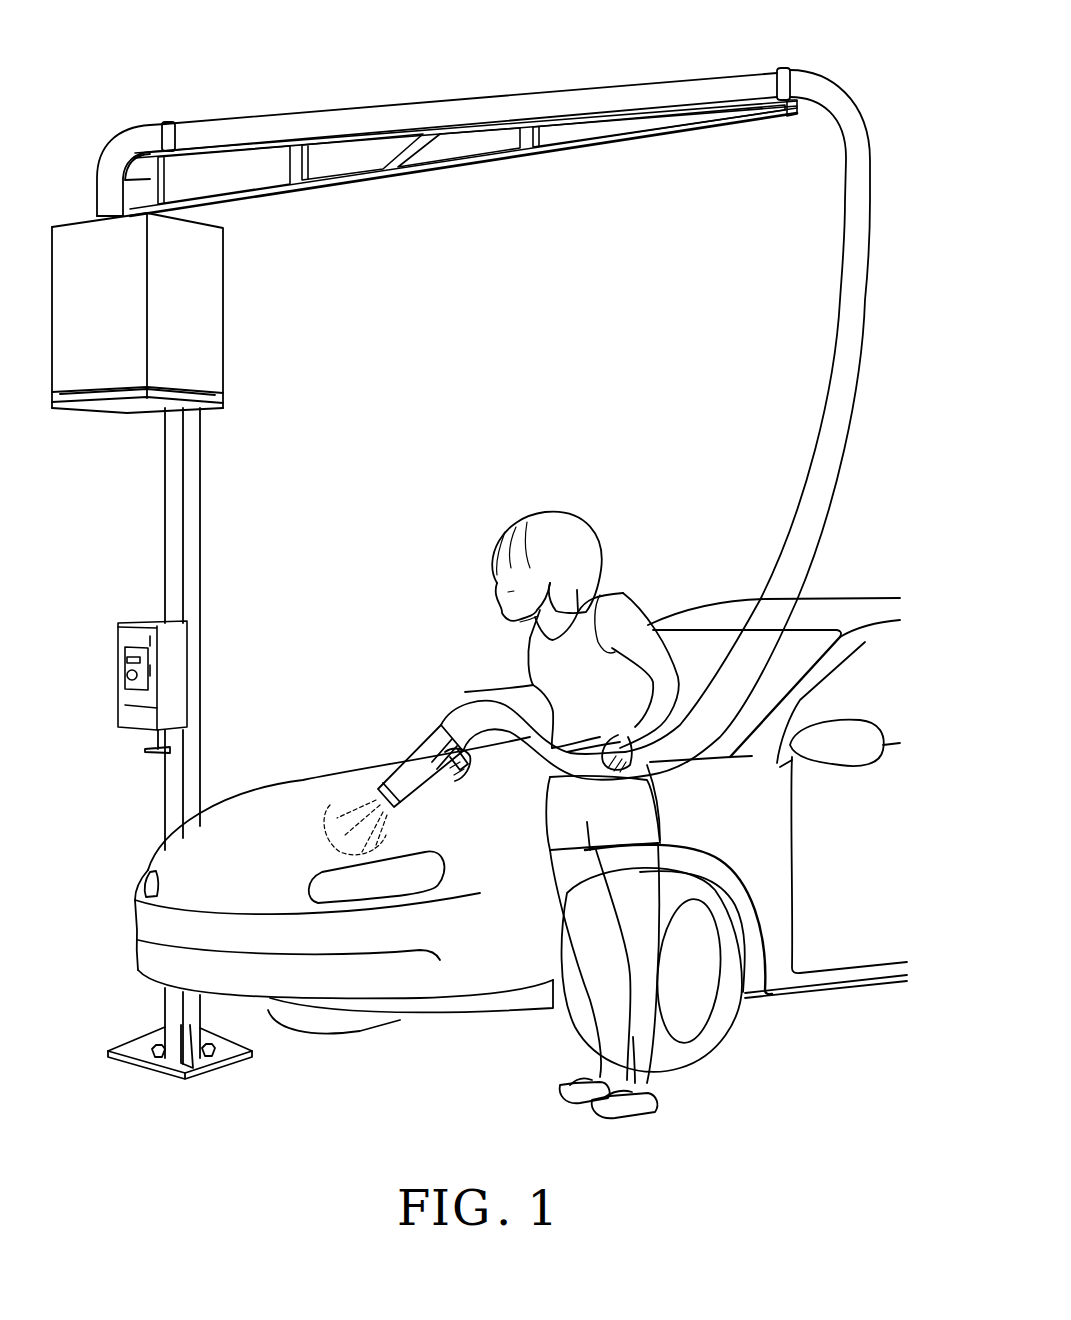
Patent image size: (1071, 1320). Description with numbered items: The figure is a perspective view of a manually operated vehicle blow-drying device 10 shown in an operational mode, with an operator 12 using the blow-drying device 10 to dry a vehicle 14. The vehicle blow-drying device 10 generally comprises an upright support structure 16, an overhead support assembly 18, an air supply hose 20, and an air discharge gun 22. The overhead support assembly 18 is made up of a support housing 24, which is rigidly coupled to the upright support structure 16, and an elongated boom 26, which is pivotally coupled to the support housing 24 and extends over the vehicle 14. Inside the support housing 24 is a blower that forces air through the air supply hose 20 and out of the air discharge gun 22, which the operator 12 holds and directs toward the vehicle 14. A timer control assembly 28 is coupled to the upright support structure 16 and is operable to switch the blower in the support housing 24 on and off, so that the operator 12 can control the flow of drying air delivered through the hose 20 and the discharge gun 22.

The vehicle blow-drying device 10 is at (153, 55).
The operator 12 is at (628, 598).
The vehicle 14 is at (292, 785).
The upright support structure 16 is at (165, 532).
The overhead support assembly 18 is at (89, 125).
The air supply hose 20 is at (842, 297).
The air discharge gun 22 is at (433, 718).
The support housing 24 is at (226, 298).
The elongated boom 26 is at (397, 174).
The timer control assembly 28 is at (118, 656).